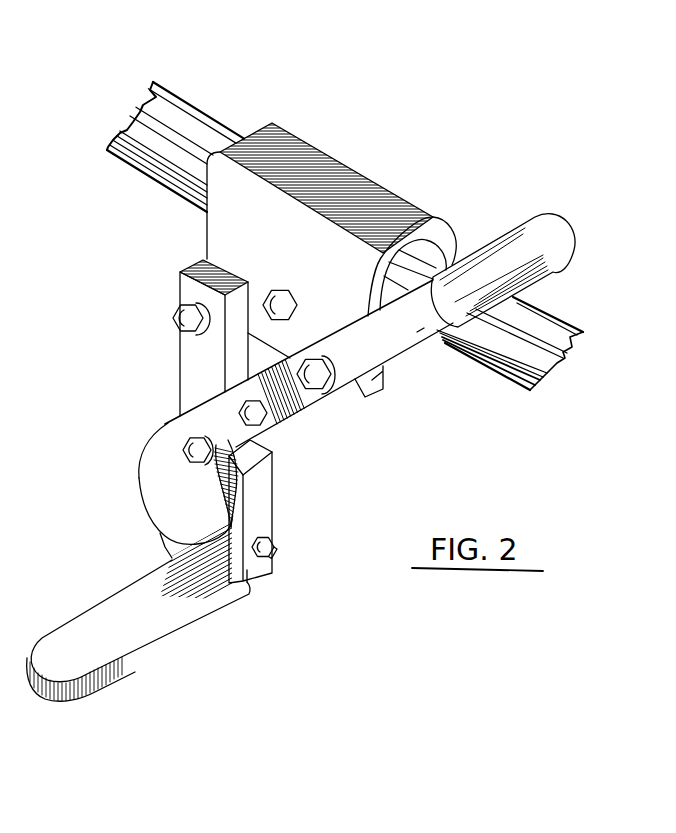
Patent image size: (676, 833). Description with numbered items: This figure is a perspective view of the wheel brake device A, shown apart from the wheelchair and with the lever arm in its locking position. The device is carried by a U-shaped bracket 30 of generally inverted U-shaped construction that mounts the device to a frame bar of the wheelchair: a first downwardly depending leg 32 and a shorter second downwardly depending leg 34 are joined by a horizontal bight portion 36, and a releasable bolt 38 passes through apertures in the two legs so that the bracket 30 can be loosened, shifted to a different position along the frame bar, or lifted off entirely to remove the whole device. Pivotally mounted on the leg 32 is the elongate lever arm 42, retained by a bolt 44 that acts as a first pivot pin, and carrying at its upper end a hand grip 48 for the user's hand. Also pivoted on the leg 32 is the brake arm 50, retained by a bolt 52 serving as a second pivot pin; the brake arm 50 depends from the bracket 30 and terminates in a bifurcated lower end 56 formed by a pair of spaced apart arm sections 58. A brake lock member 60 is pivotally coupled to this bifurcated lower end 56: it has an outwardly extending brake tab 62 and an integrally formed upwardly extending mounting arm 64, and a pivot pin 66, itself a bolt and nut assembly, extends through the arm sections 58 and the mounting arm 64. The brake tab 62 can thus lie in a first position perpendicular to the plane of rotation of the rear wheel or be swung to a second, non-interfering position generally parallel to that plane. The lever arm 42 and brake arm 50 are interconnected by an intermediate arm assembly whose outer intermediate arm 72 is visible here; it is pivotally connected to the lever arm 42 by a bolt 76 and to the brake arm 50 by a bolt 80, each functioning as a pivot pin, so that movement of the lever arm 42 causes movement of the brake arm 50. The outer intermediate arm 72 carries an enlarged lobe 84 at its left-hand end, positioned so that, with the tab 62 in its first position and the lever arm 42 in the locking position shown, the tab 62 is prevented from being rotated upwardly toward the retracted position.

The wheel brake device A is at (354, 179).
The U-shaped bracket 30 is at (354, 204).
The first downwardly depending leg 32 is at (380, 383).
The second downwardly depending leg 34 is at (440, 241).
The horizontal bight portion 36 is at (388, 200).
The releasable bolt 38 is at (277, 297).
The elongate lever arm 42 is at (417, 332).
The bolt 44 is at (316, 392).
The hand grip 48 is at (545, 238).
The brake arm 50 is at (185, 352).
The bolt 52 is at (185, 310).
The bifurcated lower end 56 is at (281, 498).
The arm sections 58 is at (173, 543).
The brake lock member 60 is at (176, 609).
The brake tab 62 is at (118, 663).
The mounting arm 64 is at (217, 563).
The pivot pin 66 is at (278, 547).
The outer intermediate arm 72 is at (215, 425).
The bolt 76 is at (262, 428).
The bolt 80 is at (192, 458).
The enlarged lobe 84 is at (160, 494).